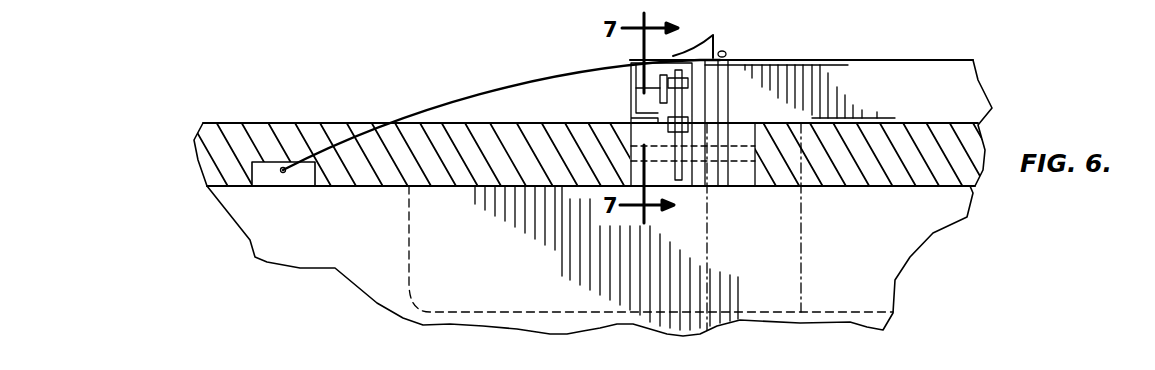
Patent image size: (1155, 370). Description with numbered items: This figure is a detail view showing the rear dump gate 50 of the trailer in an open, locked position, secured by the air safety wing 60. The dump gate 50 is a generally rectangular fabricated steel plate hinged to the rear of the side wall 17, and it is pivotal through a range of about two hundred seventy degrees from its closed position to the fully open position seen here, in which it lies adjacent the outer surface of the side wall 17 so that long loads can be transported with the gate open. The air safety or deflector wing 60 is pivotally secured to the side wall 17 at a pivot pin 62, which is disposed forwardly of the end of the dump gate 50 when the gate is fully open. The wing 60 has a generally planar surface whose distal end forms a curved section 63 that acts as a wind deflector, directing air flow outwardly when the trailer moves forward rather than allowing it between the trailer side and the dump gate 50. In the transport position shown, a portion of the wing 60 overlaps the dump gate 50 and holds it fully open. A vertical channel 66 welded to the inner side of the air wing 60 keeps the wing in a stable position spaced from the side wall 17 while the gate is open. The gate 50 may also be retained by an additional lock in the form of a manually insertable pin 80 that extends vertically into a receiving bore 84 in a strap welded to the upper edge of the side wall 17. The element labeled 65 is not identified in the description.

The side wall 17 is at (287, 128).
The dump gate 50 is at (913, 65).
The air safety wing 60 is at (527, 78).
The pivot pin 62 is at (288, 173).
The curved section 63 is at (703, 42).
The anchor pin 65 is at (262, 187).
The vertical channel 66 is at (632, 82).
The manually insertable pin 80 is at (728, 53).
The receiving bore 84 is at (723, 52).